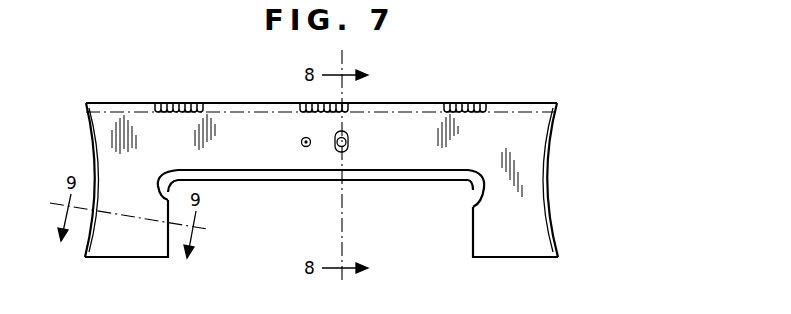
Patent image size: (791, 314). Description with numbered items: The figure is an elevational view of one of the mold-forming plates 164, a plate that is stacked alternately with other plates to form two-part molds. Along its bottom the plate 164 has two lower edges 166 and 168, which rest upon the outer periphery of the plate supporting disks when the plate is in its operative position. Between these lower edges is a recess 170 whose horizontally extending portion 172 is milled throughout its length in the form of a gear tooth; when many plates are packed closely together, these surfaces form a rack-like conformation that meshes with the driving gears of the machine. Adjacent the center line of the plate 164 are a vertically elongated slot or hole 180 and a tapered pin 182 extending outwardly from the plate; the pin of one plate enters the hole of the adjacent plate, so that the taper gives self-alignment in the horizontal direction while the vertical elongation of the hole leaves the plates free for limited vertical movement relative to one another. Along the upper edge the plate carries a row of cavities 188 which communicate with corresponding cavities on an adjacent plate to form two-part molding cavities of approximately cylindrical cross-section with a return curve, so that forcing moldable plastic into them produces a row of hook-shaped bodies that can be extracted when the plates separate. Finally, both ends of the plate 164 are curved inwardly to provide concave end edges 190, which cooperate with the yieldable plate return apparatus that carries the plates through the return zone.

The mold-forming plate 164 is at (514, 101).
The lower edge 166 is at (527, 258).
The lower edge 168 is at (106, 257).
The recess 170 is at (472, 218).
The horizontally extending portion 172 is at (315, 182).
The vertically elongated slot or hole 180 is at (352, 143).
The tapered pin 182 is at (300, 142).
The cavities 188 is at (211, 102).
The concave end edge 190 is at (91, 134).